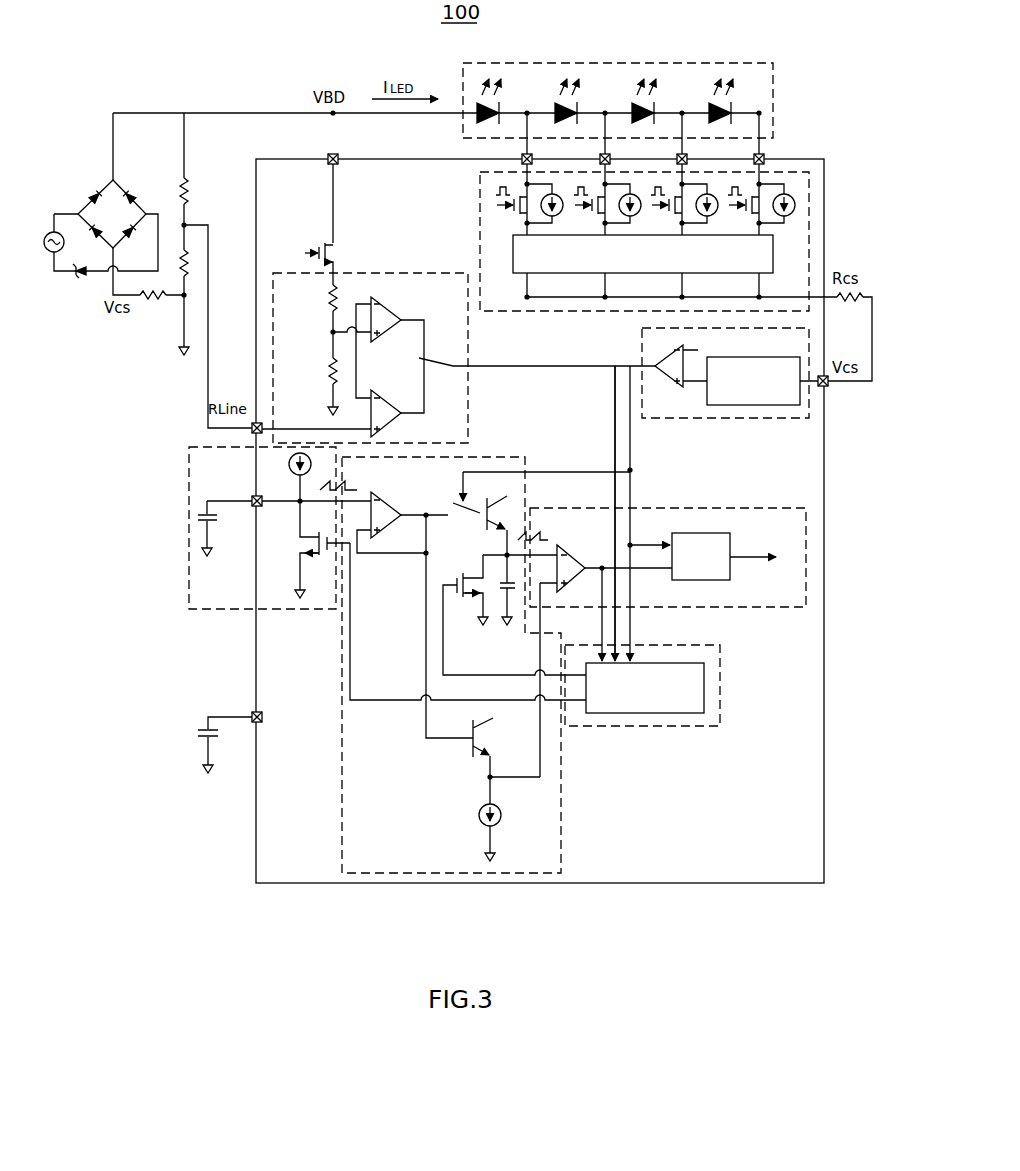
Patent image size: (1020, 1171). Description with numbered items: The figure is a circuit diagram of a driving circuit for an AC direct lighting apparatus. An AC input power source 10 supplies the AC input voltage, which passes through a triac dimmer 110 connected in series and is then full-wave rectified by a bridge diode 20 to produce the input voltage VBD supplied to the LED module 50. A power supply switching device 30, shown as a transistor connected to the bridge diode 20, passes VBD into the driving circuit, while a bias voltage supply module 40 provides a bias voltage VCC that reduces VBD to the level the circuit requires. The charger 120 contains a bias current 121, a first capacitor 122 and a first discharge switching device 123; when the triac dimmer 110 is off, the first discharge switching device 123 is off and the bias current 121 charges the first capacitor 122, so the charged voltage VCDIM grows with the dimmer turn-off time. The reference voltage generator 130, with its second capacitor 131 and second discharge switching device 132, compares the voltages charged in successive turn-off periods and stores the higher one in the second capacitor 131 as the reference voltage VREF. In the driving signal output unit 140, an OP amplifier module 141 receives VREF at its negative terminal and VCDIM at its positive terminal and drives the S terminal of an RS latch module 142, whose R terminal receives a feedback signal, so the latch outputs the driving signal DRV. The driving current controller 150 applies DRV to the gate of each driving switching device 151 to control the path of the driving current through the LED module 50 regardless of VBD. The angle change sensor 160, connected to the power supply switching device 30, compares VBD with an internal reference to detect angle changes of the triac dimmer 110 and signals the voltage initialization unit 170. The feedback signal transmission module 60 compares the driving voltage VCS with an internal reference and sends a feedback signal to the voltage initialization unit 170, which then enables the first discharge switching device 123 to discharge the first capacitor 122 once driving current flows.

The AC input power source 10 is at (54, 232).
The bridge diode 20 is at (95, 192).
The triac dimmer 110 is at (82, 283).
The power supply switching device 30 is at (312, 252).
The bias voltage supply module 40 is at (212, 703).
The LED module 50 is at (773, 100).
The feedback signal transmission module 60 is at (809, 409).
The charger 120 is at (250, 528).
The bias current 121 is at (288, 468).
The first capacitor 122 is at (197, 518).
The first discharge switching device 123 is at (300, 544).
The reference voltage generator 130 is at (464, 694).
The second capacitor 131 is at (515, 600).
The second discharge switching device 132 is at (465, 600).
The driving signal output unit 140 is at (703, 539).
The OP amplifier module 141 is at (575, 548).
The RS latch module 142 is at (705, 533).
The driving current controller 150 is at (678, 237).
The driving switching device 151 is at (795, 206).
The angle change sensor 160 is at (418, 273).
The voltage initialization unit 170 is at (620, 727).